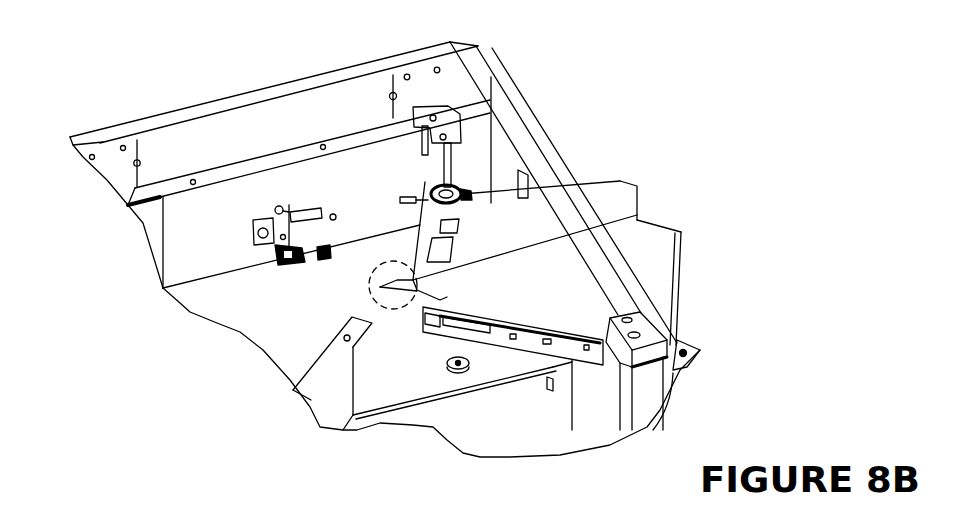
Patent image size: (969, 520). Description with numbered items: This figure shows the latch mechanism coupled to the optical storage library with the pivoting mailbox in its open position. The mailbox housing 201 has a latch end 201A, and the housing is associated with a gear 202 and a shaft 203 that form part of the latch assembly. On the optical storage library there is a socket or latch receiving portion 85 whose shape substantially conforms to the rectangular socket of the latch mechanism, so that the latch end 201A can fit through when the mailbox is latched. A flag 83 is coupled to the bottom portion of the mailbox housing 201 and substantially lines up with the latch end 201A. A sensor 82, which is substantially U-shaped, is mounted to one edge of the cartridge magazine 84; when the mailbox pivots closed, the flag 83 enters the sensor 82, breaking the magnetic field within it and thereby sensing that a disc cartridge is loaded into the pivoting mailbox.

The sensor 82 is at (277, 263).
The flag 83 is at (437, 345).
The cartridge magazine 84 is at (380, 380).
The latch receiving portion 85 is at (310, 205).
The mailbox housing 201 is at (587, 302).
The latch end 201A is at (620, 220).
The gear 202 is at (480, 193).
The shaft 203 is at (453, 147).